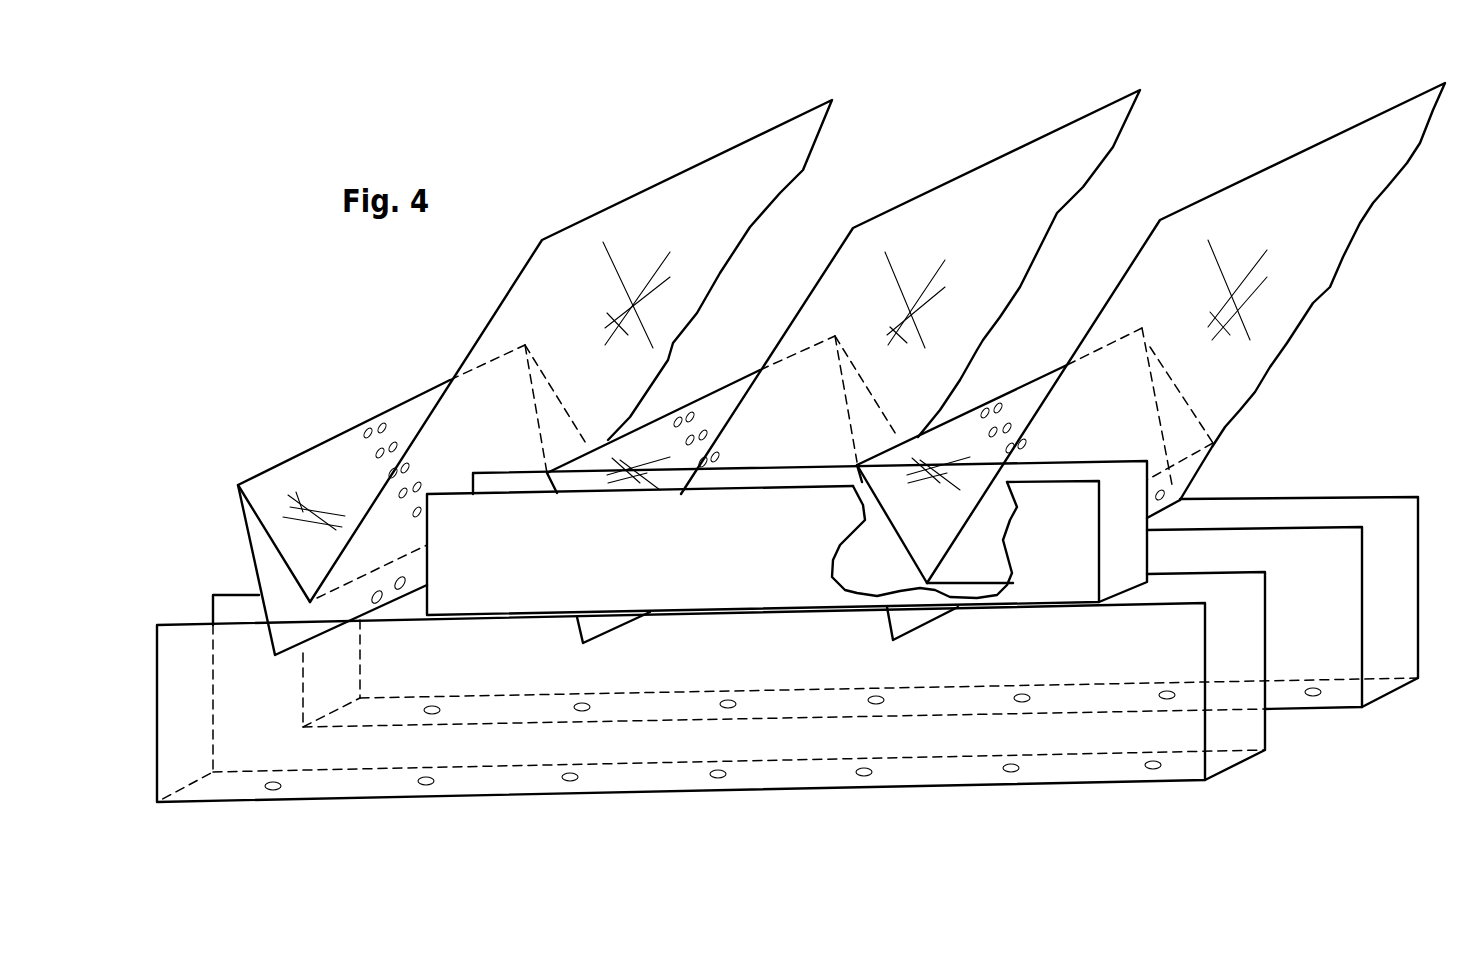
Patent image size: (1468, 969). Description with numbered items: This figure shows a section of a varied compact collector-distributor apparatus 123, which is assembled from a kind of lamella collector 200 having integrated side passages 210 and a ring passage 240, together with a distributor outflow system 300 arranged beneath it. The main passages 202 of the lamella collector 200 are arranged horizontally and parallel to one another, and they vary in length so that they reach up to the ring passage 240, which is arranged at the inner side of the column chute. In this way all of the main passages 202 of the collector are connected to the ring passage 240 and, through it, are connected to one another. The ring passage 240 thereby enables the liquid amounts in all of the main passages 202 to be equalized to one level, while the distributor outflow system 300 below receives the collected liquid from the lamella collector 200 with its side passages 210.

The compact collector-distributor apparatus 123 is at (801, 444).
The lamella collector 200 is at (877, 316).
The main passage 202 is at (953, 679).
The side passage 210 is at (725, 593).
The ring passage 240 is at (750, 549).
The distributor outflow system 300 is at (787, 649).